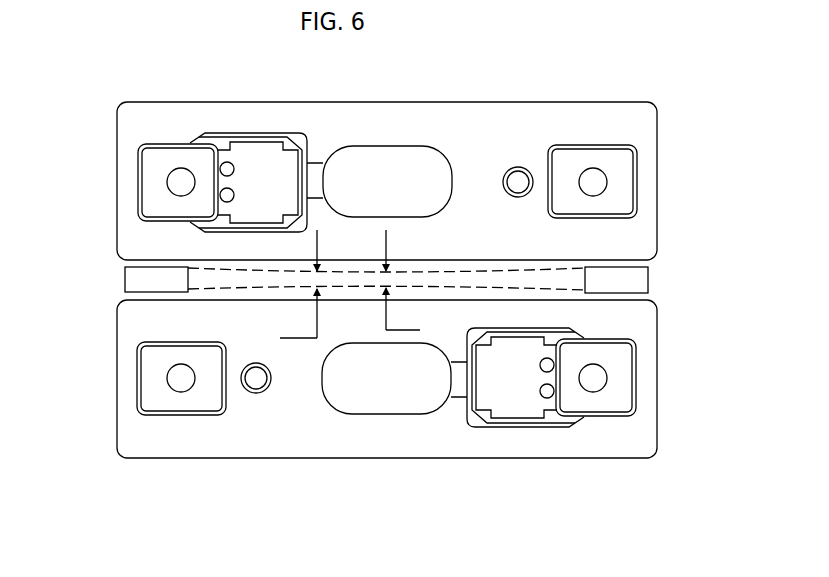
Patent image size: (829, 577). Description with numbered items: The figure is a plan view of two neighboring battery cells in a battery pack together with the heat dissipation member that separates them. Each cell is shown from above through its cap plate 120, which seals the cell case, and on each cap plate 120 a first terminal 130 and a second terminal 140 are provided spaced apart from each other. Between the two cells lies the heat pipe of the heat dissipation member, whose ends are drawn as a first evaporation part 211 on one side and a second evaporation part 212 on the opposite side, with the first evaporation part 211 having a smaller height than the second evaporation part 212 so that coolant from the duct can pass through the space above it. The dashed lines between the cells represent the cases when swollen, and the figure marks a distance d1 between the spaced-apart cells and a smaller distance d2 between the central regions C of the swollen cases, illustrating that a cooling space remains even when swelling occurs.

The cap plate 120 is at (285, 443).
The first terminal 130 is at (178, 403).
The second terminal 140 is at (593, 403).
The first evaporation part 211 is at (128, 278).
The second evaporation part 212 is at (648, 279).
The central region C is at (357, 289).
The distance between battery cells d1 is at (298, 284).
The distance between central regions d2 is at (403, 281).